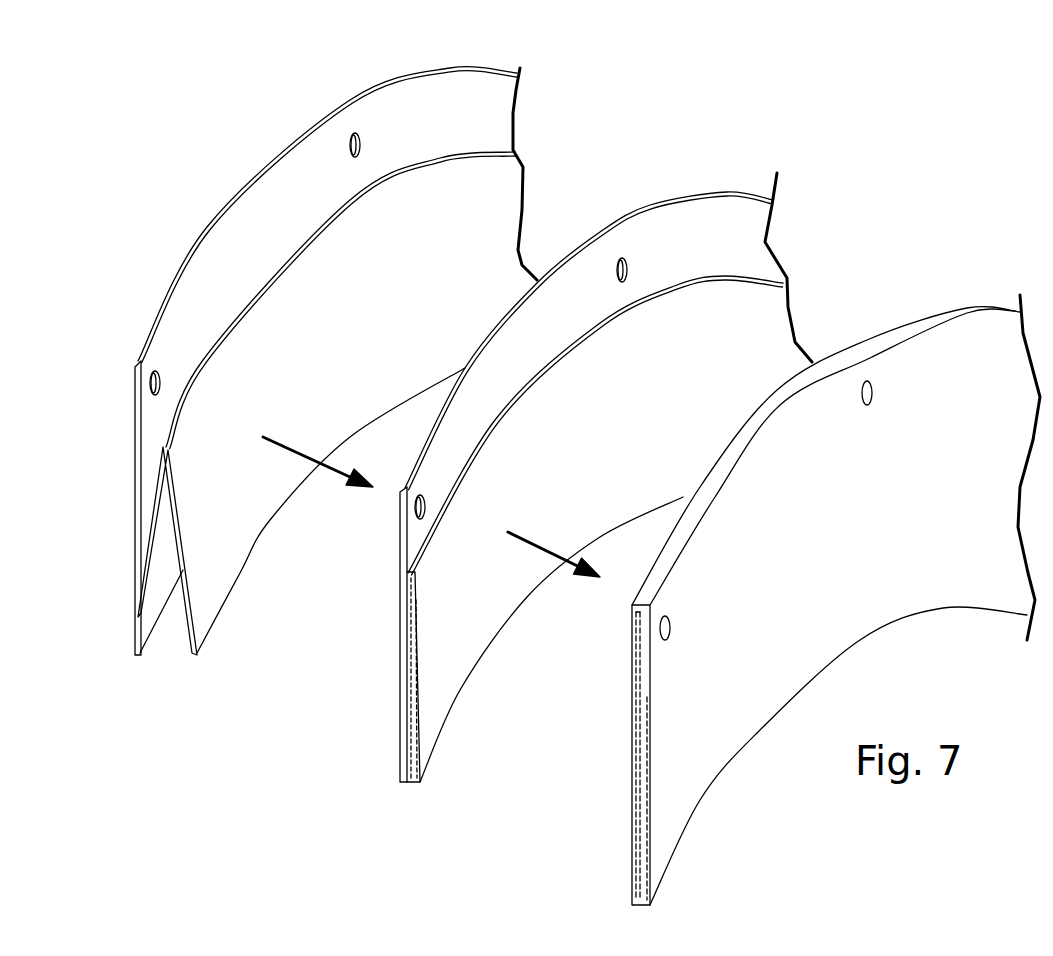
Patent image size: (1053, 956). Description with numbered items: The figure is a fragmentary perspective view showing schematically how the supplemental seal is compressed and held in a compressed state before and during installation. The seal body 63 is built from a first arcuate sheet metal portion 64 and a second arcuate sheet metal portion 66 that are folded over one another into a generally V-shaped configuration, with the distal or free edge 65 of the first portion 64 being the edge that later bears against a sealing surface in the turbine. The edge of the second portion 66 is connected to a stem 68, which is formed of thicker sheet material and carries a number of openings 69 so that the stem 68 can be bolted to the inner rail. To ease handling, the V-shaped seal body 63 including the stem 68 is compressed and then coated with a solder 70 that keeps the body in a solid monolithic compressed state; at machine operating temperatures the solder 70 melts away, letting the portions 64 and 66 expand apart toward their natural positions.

The seal body 63 is at (160, 412).
The first arcuate sheet metal portion 64 is at (213, 553).
The distal or free edge 65 is at (272, 523).
The second arcuate sheet metal portion 66 is at (160, 522).
The stem 68 is at (133, 376).
The openings 69 is at (353, 134).
The solder 70 is at (678, 798).